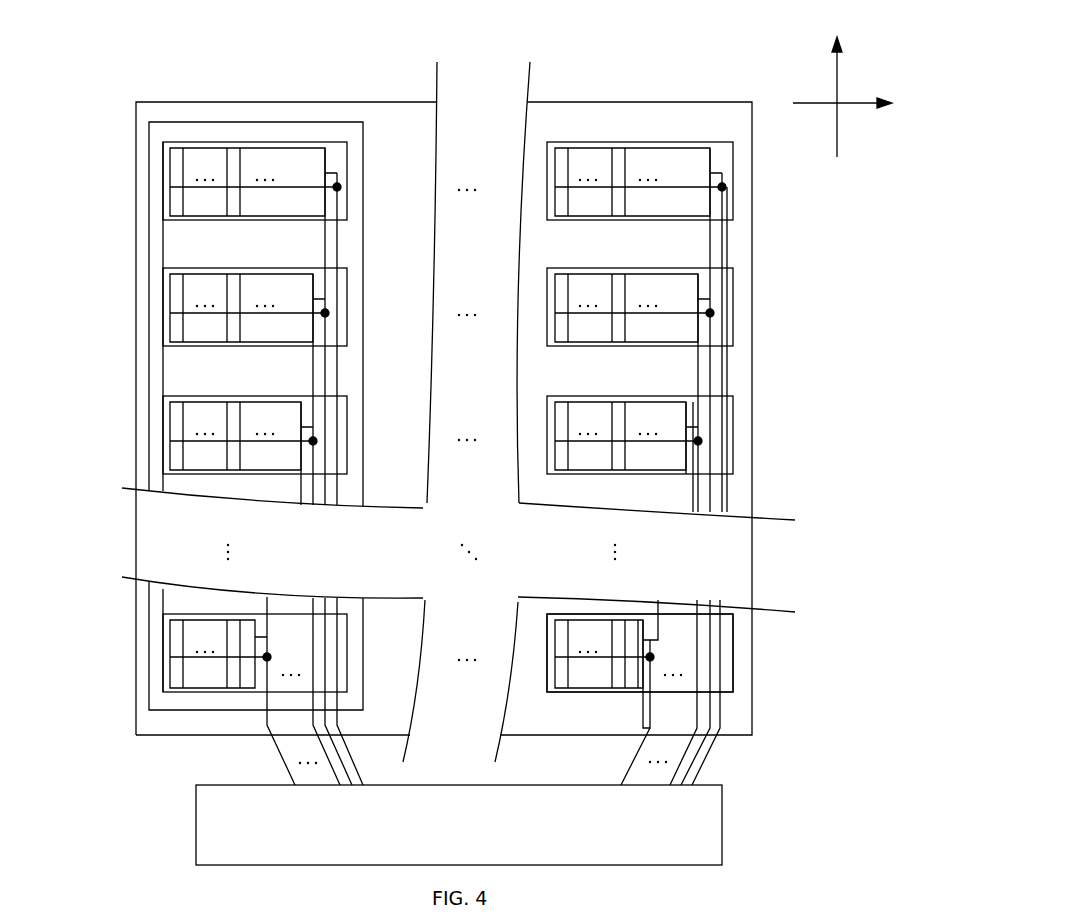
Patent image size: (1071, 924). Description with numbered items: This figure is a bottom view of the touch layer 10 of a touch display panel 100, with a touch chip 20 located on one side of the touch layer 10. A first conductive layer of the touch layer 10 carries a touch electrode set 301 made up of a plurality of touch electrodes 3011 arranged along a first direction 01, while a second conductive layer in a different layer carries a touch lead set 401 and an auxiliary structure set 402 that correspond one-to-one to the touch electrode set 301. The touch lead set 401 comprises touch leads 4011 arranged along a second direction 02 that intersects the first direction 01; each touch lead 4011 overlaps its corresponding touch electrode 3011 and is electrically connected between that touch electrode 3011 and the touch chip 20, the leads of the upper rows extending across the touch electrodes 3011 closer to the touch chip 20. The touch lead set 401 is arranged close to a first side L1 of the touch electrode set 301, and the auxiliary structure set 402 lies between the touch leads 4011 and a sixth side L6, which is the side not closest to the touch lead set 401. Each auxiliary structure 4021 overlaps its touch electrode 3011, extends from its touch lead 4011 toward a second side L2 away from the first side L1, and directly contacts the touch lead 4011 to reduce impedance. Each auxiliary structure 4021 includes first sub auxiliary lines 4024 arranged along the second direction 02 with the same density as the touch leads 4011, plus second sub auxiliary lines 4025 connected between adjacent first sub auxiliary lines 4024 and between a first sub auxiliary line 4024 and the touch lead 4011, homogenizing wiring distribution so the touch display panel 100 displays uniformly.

The touch display panel 100 is at (190, 77).
The touch layer 10 is at (742, 102).
The touch electrode set 301 is at (297, 121).
The touch electrode 3011 is at (585, 141).
The auxiliary structure 4021 is at (228, 165).
The auxiliary structure set 402 is at (347, 143).
The touch lead set 401 is at (728, 200).
The touch lead 4011 is at (722, 178).
The first sub auxiliary line 4024 is at (168, 634).
The second sub auxiliary line 4025 is at (173, 660).
The sixth side L6 is at (163, 312).
The second side L2 is at (162, 425).
The first side L1 is at (733, 673).
The touch chip 20 is at (722, 823).
The first direction 01 is at (839, 80).
The second direction 02 is at (859, 106).